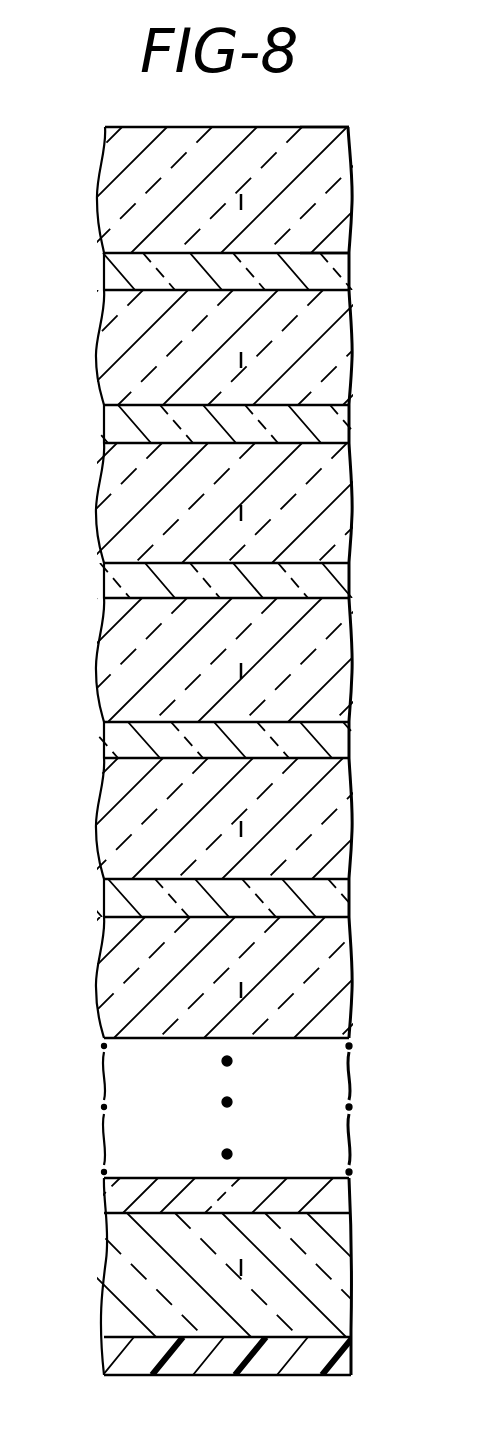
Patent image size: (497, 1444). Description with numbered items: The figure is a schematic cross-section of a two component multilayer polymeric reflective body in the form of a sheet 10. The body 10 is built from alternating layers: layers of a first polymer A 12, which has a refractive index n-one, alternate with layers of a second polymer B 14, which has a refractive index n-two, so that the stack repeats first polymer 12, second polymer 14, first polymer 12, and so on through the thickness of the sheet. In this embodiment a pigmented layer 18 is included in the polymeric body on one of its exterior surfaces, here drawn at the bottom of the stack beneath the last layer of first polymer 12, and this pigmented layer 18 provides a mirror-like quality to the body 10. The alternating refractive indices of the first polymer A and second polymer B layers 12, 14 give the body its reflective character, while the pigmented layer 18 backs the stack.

The multilayer reflective polymer body 10 is at (360, 110).
The layer of first polymer 12 is at (109, 161).
The layer of second polymer 14 is at (109, 277).
The pigmented layer 18 is at (108, 1352).
The first polymer A is at (330, 157).
The second polymer B is at (333, 273).